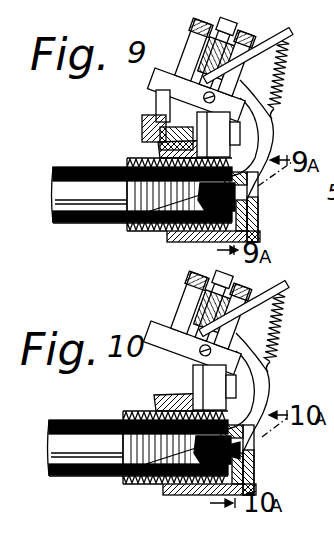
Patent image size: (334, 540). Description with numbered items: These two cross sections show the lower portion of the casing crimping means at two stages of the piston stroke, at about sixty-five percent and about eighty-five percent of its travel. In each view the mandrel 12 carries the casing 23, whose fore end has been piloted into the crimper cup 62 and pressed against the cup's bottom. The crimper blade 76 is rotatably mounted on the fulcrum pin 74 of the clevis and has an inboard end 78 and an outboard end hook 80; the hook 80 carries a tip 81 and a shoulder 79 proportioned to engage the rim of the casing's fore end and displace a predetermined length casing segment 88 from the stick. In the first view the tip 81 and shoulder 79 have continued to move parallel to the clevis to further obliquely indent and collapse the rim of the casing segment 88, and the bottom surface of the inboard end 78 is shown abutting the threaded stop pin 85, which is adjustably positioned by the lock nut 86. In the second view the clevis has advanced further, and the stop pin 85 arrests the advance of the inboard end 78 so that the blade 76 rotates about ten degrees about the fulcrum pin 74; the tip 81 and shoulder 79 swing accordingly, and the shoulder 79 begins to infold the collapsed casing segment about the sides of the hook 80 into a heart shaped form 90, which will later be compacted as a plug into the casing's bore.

In FIG. 9, the mandrel 12 is at (52, 200).
In FIG. 10, the mandrel 12 is at (134, 472).
In FIG. 9, the casing 23 is at (80, 166).
In FIG. 9, the crimper cup 62 is at (128, 160).
In FIG. 10, the crimper cup 62 is at (144, 434).
In FIG. 9, the fulcrum pin 74 is at (220, 96).
In FIG. 10, the fulcrum pin 74 is at (244, 317).
In FIG. 9, the crimper blade 76 is at (279, 119).
In FIG. 10, the crimper blade 76 is at (274, 349).
In FIG. 9, the inboard end 78 is at (152, 86).
In FIG. 10, the inboard end 78 is at (187, 345).
In FIG. 10, the shoulder 79 is at (270, 403).
In FIG. 9, the hook 80 is at (272, 147).
In FIG. 9, the tip 81 is at (242, 202).
In FIG. 10, the tip 81 is at (258, 460).
In FIG. 9, the stop pin 85 is at (150, 97).
In FIG. 10, the stop pin 85 is at (179, 306).
In FIG. 9, the lock nut 86 is at (143, 115).
In FIG. 9, the casing segment 88 is at (146, 232).
In FIG. 10, the heart shaped form 90 is at (197, 509).